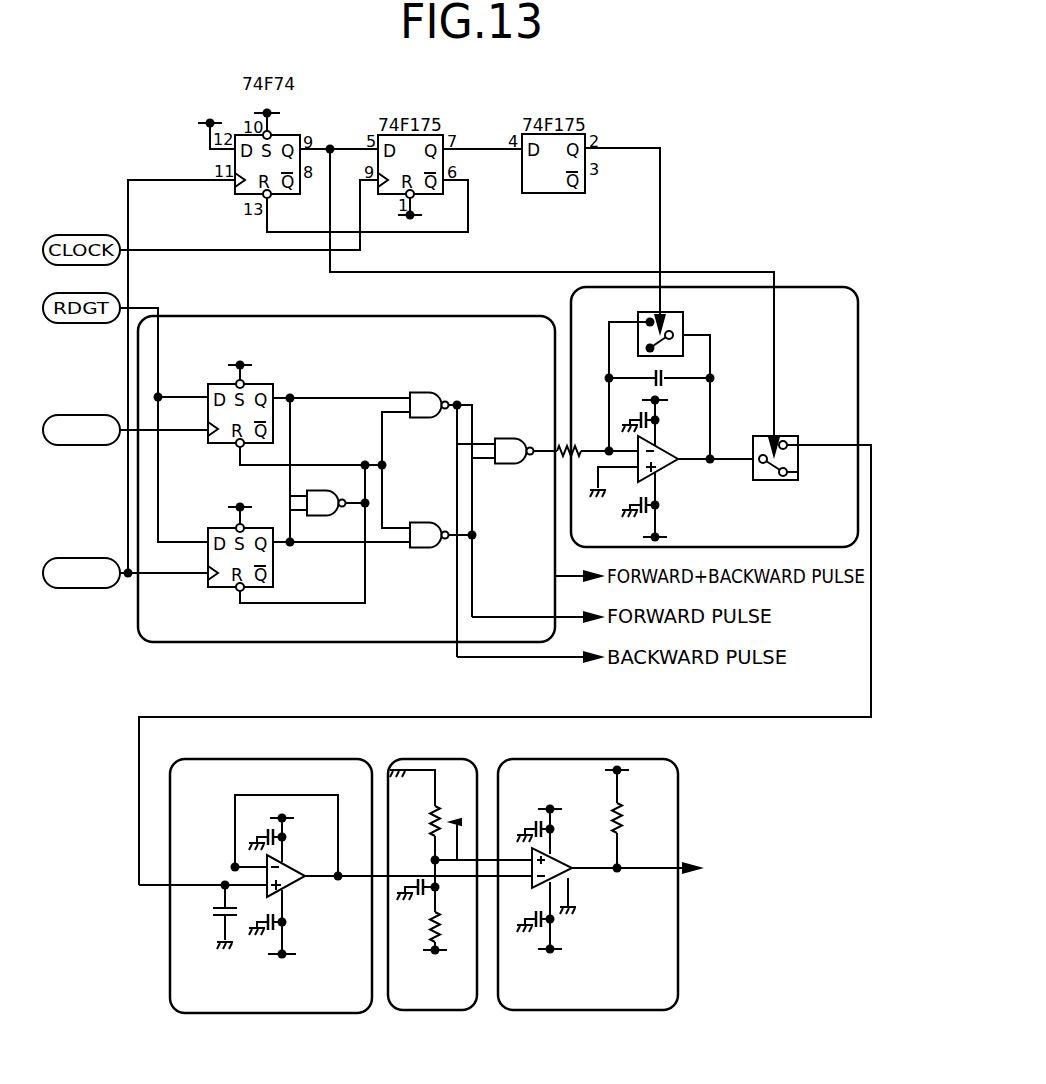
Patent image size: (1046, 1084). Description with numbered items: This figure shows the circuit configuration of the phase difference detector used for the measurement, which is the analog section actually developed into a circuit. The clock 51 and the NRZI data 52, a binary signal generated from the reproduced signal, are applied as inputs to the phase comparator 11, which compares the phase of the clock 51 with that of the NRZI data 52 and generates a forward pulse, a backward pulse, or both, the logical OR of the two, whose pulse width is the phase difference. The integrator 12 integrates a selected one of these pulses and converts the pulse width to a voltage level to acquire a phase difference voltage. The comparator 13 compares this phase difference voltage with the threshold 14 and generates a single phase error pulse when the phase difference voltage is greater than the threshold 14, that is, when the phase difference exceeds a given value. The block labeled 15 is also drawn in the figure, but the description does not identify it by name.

The phase comparator 11 is at (179, 643).
The integrator 12 is at (814, 287).
The comparator 13 is at (591, 1013).
The threshold 14 is at (433, 1012).
The integrating circuit 15 is at (269, 1014).
The clock 51 is at (90, 590).
The NRZI data 52 is at (90, 447).